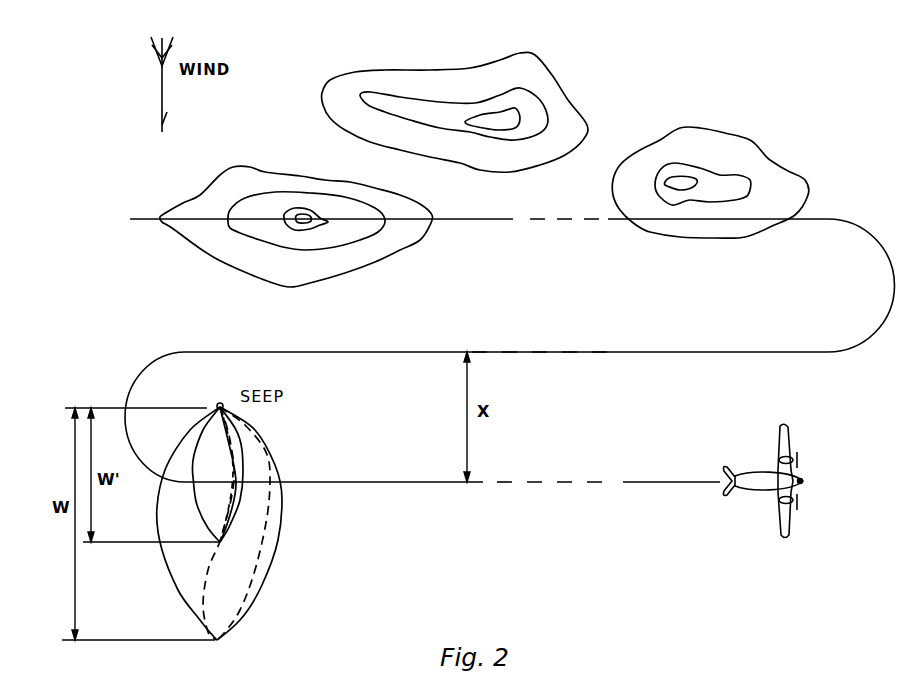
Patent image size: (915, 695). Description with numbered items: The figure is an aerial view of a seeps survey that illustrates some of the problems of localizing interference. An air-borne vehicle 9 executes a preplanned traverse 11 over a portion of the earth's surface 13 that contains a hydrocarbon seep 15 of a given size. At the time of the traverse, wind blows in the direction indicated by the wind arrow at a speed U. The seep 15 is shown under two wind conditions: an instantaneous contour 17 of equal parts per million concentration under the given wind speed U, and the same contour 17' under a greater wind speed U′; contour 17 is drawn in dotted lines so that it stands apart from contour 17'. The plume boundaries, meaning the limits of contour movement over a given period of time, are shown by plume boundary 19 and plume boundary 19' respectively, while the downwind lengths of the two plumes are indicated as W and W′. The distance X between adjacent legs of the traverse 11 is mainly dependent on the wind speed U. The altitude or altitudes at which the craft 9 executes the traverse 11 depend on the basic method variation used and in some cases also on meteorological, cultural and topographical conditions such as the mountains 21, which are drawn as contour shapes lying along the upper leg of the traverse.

The air-borne vehicle 9 is at (790, 438).
The preplanned traverse 11 is at (641, 480).
The portion of the earth's surface 13 is at (511, 553).
The hydrocarbon seep 15 is at (219, 402).
The instantaneous contour 17 is at (190, 523).
The instantaneous contour under greater wind speed 17' is at (217, 474).
The plume boundary 19 is at (265, 523).
The plume boundary under greater wind speed 19' is at (197, 474).
The mountains 21 is at (473, 170).